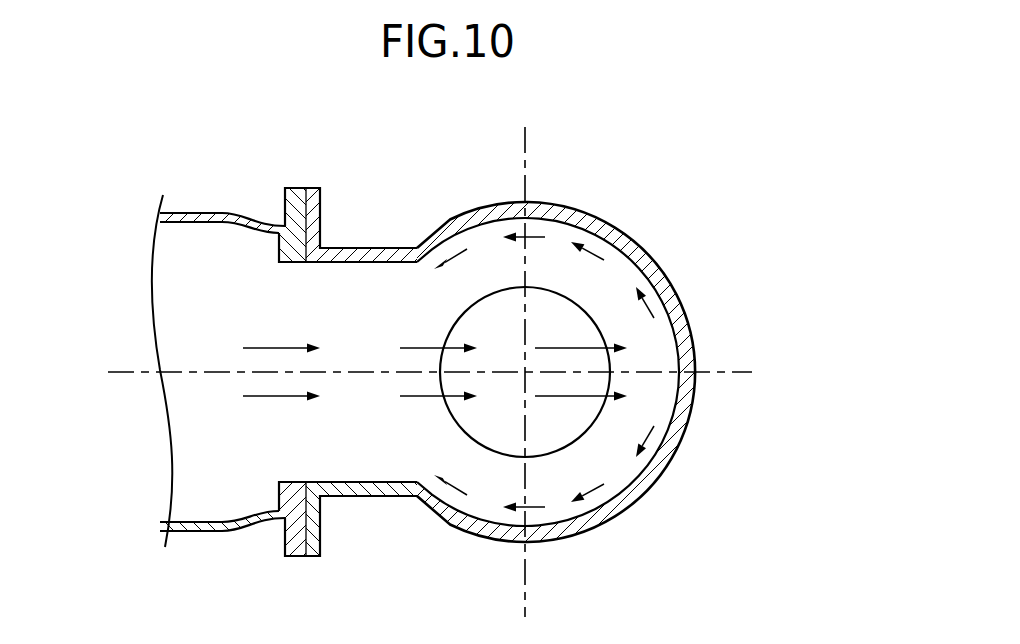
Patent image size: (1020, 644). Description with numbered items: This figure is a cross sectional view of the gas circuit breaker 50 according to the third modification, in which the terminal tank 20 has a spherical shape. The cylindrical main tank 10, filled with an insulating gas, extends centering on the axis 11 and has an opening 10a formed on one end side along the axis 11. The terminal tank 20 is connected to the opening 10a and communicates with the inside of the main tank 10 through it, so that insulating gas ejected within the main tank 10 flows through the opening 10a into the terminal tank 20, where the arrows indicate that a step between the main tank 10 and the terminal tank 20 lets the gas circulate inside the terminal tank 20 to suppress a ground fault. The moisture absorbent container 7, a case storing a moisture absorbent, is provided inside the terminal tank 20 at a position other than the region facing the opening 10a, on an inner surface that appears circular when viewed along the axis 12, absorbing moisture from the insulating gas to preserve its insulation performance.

The gas circuit breaker 50 is at (385, 146).
The main tank 10 is at (196, 213).
The opening 10a is at (262, 232).
The moisture absorbent container 7 is at (502, 290).
The terminal tank 20 is at (612, 228).
The axis 11 is at (735, 372).
The axis 12 is at (527, 378).